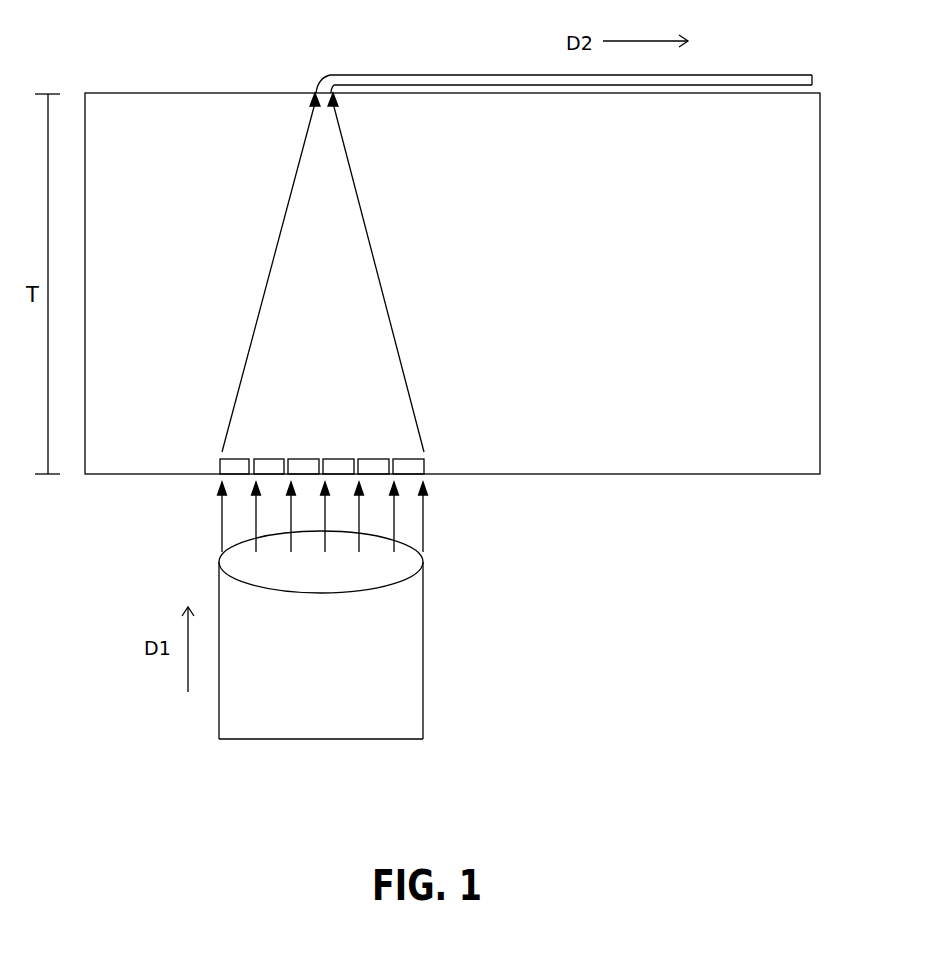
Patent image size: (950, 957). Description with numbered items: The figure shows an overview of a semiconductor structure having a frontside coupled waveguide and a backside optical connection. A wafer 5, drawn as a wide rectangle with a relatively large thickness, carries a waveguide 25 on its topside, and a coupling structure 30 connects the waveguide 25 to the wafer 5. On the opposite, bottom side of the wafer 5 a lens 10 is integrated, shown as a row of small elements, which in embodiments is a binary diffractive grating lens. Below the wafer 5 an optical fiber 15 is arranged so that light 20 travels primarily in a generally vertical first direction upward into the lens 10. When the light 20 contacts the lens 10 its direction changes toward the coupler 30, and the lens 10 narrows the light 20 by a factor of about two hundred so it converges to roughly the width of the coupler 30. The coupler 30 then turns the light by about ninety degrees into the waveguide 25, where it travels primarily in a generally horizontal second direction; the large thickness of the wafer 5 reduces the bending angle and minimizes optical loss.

The wafer 5 is at (746, 466).
The lens 10 is at (220, 463).
The optical fiber 15 is at (415, 666).
The light 20 is at (424, 520).
The waveguide 25 is at (408, 74).
The coupling structure 30 is at (321, 77).